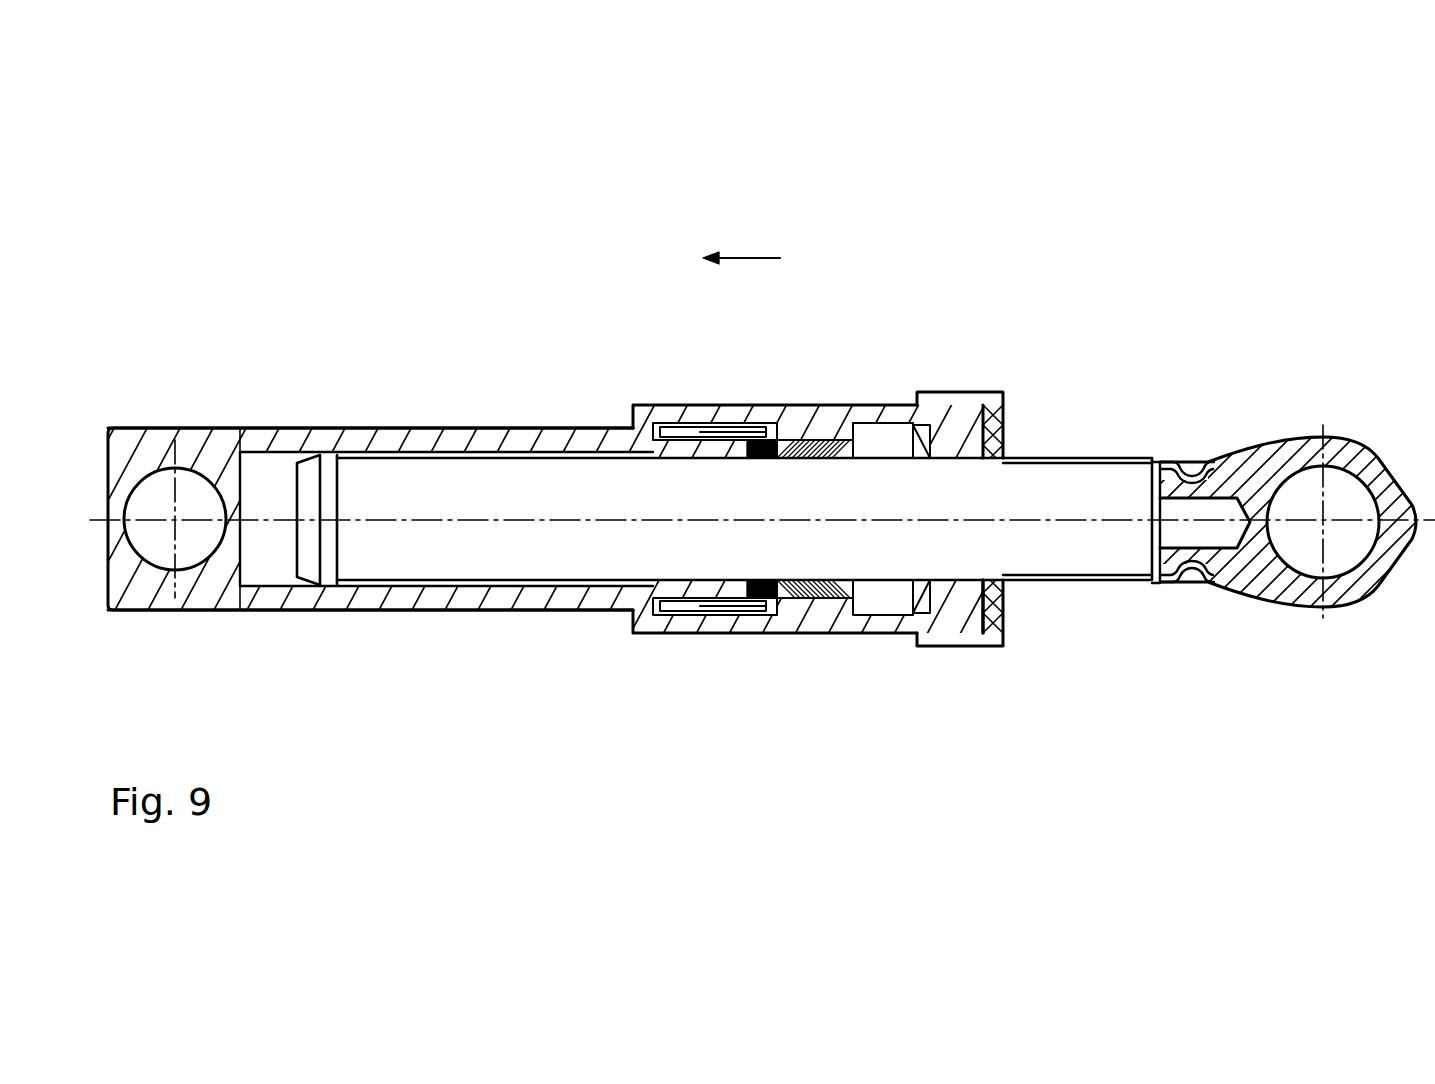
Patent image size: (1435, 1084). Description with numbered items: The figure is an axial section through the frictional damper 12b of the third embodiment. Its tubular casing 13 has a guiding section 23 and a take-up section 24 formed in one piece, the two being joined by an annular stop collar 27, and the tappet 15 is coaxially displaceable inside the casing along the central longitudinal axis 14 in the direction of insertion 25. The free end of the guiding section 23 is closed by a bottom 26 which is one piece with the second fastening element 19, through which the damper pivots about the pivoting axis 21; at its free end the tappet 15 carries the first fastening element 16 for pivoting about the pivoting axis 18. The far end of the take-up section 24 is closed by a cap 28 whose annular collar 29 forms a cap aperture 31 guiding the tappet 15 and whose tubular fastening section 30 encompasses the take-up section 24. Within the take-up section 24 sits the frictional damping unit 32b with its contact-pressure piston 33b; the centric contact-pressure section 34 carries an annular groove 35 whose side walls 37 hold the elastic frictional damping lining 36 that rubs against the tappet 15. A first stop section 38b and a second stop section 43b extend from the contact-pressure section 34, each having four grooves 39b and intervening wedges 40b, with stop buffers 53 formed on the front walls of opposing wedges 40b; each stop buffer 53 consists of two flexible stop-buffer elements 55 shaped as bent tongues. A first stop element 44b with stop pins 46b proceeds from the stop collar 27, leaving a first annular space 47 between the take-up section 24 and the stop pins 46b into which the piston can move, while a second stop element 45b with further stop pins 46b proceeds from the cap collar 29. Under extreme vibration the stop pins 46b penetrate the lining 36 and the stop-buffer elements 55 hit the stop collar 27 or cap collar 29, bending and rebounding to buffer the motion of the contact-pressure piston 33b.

The frictional damper 12b is at (477, 353).
The direction of insertion 25 is at (743, 256).
The second fastening element 19 is at (151, 445).
The pivoting axis 21 is at (176, 546).
The bottom 26 is at (262, 455).
The tubular casing 13 is at (347, 428).
The guiding section 23 is at (437, 428).
The central longitudinal axis 14 is at (273, 525).
The take-up section 24 is at (912, 398).
The annular stop collar 27 is at (633, 420).
The first stop element 44b is at (640, 635).
The first annular space 47 is at (645, 410).
The frictional damping unit 32b is at (650, 633).
The stop pins 46b is at (672, 412).
The first stop section 38b is at (715, 627).
The contact-pressure section 34 is at (770, 418).
The longitudinal grooves 39b is at (750, 626).
The frictional damping lining 36 is at (803, 420).
The contact-pressure piston 33b is at (778, 632).
The annular groove 35 is at (833, 420).
The wedges 40b is at (893, 610).
The side walls 37 is at (783, 418).
The second stop section 43b is at (888, 608).
The stop buffers 53 is at (920, 628).
The tubular fastening section 30 is at (985, 393).
The cap 28 is at (1005, 447).
The cap aperture 31 is at (1013, 598).
The second stop element 45b is at (1008, 597).
The stop-buffer elements 55 is at (970, 595).
The annular collar 29 is at (1150, 457).
The tappet 15 is at (1240, 460).
The first fastening element 16 is at (1387, 458).
The pivoting axis 18 is at (1357, 466).